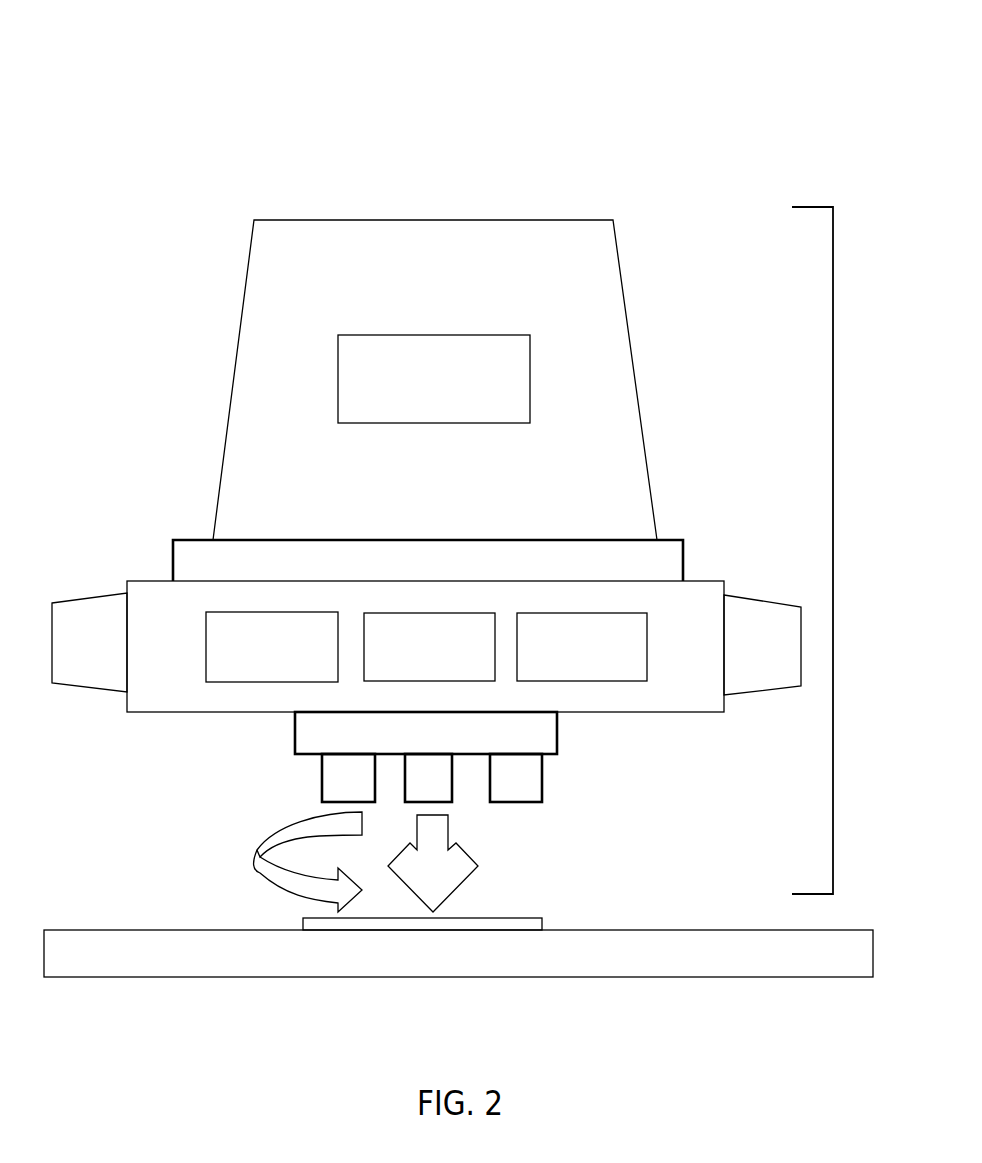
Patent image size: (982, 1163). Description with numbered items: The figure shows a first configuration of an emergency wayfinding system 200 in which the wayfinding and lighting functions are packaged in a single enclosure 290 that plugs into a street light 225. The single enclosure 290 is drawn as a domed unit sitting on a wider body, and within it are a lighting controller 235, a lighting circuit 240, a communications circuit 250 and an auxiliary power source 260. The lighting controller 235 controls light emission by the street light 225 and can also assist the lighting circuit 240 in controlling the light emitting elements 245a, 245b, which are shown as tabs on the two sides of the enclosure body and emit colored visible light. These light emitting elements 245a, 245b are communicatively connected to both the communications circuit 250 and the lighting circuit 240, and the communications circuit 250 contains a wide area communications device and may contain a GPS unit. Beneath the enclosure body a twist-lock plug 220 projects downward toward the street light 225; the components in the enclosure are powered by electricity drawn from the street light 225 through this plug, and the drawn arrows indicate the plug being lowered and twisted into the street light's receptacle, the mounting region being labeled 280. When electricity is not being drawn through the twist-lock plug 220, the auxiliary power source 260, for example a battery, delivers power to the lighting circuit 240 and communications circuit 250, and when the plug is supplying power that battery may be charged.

The emergency wayfinding system 200 is at (342, 270).
The lighting controller 235 is at (434, 379).
The lighting circuit 240 is at (272, 647).
The communications circuit 250 is at (429, 647).
The auxiliary power source 260 is at (582, 647).
The twist-lock plug 220 is at (543, 778).
The light emitting element 245a is at (87, 688).
The light emitting element 245b is at (780, 688).
The twist-lock receptacle / mounting 280 is at (515, 918).
The street light 225 is at (565, 930).
The single enclosure 290 is at (833, 508).